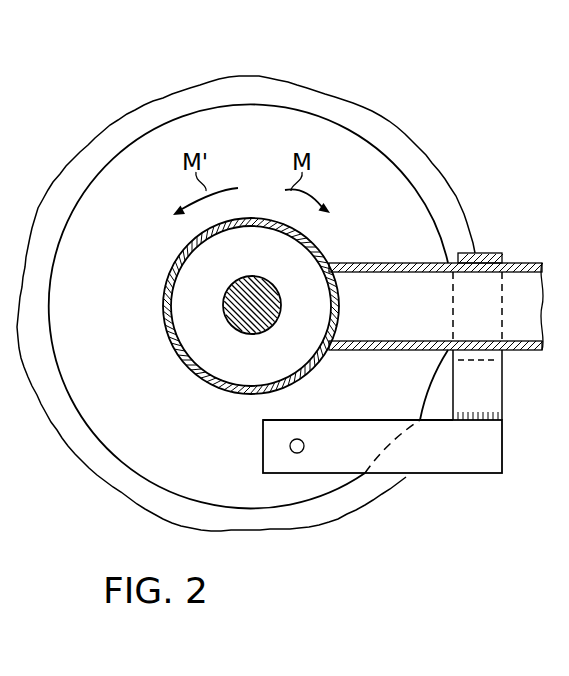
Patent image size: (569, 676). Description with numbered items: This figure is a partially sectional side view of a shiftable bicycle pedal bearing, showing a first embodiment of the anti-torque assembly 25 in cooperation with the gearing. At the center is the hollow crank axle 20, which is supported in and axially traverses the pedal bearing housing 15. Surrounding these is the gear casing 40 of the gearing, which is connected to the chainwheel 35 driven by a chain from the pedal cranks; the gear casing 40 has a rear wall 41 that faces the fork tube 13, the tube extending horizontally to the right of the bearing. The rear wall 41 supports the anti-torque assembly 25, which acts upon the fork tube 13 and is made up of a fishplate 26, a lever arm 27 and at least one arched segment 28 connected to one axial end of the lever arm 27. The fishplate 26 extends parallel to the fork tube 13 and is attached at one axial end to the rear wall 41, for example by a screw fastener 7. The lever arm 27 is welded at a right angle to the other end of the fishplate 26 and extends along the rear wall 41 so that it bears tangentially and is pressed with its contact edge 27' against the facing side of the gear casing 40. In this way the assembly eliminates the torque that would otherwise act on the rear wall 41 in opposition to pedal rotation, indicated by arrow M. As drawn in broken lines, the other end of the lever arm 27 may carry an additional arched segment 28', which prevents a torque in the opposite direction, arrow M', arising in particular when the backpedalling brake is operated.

The screw fastener 7 is at (290, 447).
The fork tube 13 is at (388, 283).
The pedal bearing housing 15 is at (172, 268).
The crank axle 20 is at (263, 290).
The anti-torque assembly 25 is at (432, 484).
The fishplate 26 is at (345, 440).
The lever arm 27 is at (445, 385).
The contact edge 27' is at (443, 306).
The arched segment 28 is at (501, 234).
The additional arched segment 28' is at (507, 387).
The chainwheel 35 is at (99, 153).
The gear casing 40 is at (237, 98).
The rear wall 41 is at (125, 350).